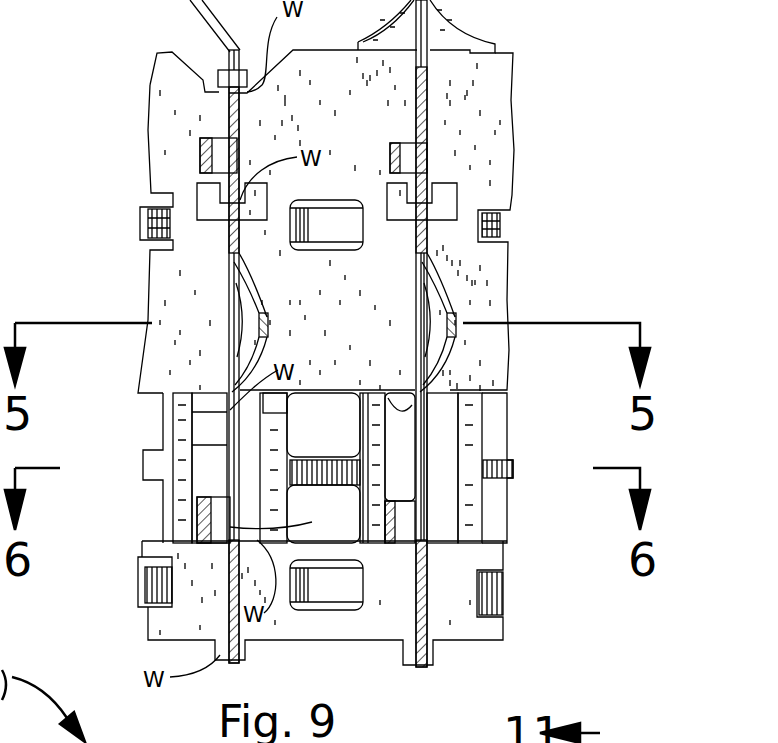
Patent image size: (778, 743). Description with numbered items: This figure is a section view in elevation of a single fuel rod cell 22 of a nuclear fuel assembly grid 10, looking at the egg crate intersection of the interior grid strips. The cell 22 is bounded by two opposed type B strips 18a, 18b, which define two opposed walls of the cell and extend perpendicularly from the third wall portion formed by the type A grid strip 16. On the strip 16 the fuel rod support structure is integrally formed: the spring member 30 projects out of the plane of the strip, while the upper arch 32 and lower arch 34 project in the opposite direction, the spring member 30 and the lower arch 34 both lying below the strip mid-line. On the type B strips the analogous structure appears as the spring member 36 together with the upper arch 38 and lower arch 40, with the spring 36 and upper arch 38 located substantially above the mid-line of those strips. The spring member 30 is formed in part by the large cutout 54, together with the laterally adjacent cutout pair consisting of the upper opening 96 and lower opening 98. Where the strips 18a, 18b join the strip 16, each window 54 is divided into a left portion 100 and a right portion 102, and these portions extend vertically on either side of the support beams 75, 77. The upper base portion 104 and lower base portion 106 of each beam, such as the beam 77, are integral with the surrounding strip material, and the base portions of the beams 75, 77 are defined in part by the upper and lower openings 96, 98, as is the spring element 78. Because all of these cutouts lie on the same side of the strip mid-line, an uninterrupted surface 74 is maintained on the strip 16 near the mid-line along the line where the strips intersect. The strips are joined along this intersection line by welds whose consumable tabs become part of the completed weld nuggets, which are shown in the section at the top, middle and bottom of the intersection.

The nuclear fuel assembly grid 10 is at (560, 68).
The interior grid strip 16 is at (528, 134).
The cell 22 is at (265, 121).
The opposed strip 18a is at (227, 126).
The opposed strip 18b is at (427, 238).
The upper arch 32 is at (148, 215).
The upper arch 38 is at (390, 150).
The uninterrupted surface 74 is at (228, 255).
The spring member 36 is at (265, 312).
The upper base portion 104 is at (400, 372).
The left portion of window 100 is at (228, 373).
The upper opening 96 is at (232, 412).
The large cutout 54 is at (207, 441).
The support beam 75 is at (280, 448).
The lower opening 98 is at (215, 520).
The spring member 30 is at (348, 448).
The lower arch 40 is at (395, 514).
The support beam 77 is at (377, 448).
The spring element 78 is at (360, 470).
The right portion of window 102 is at (400, 483).
The lower base portion 106 is at (365, 545).
The lower arch 34 is at (347, 590).